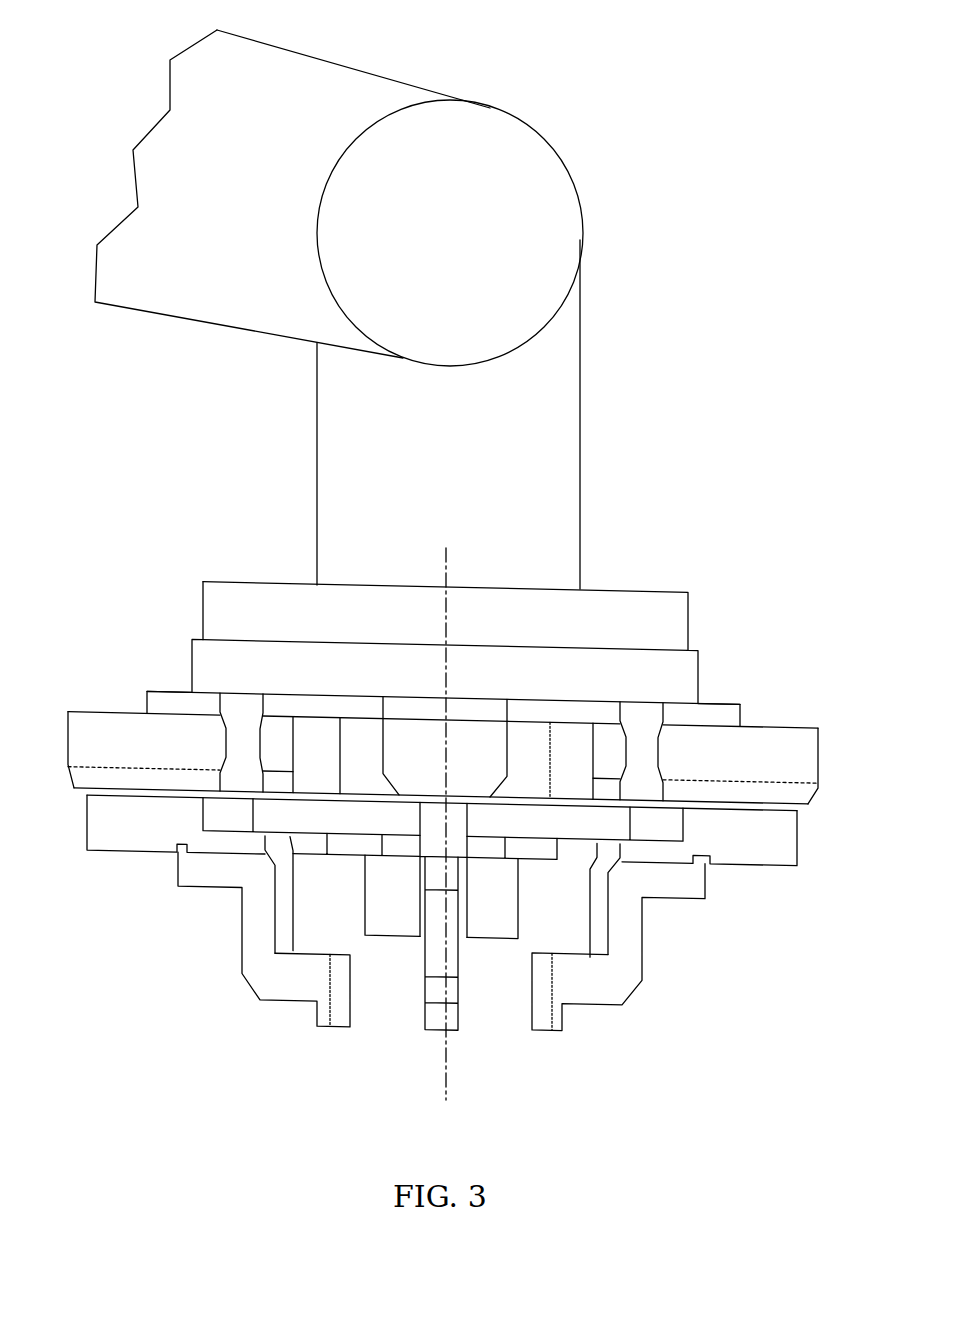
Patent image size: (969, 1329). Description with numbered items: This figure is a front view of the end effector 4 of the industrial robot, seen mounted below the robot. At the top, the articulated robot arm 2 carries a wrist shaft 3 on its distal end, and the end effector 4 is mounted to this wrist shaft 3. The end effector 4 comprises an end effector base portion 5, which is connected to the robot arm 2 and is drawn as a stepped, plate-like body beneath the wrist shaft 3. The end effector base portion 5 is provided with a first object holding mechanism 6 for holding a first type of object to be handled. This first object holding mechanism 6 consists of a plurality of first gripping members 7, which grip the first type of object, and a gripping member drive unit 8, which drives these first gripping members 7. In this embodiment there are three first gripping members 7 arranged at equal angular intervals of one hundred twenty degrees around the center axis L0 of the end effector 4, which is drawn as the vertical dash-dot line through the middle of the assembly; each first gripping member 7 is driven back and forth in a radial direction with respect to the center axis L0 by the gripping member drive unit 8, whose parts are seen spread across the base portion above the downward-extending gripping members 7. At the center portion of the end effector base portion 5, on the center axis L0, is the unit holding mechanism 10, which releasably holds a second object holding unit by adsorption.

The robot arm 2 is at (372, 73).
The wrist shaft 3 is at (580, 498).
The end effector 4 is at (740, 520).
The end effector base portion 5 is at (688, 613).
The first object holding mechanism 6 is at (455, 805).
The first gripping members 7 is at (262, 980).
The gripping member drive unit 8 is at (122, 727).
The unit holding mechanism 10 is at (470, 942).
The center axis L0 is at (440, 1063).